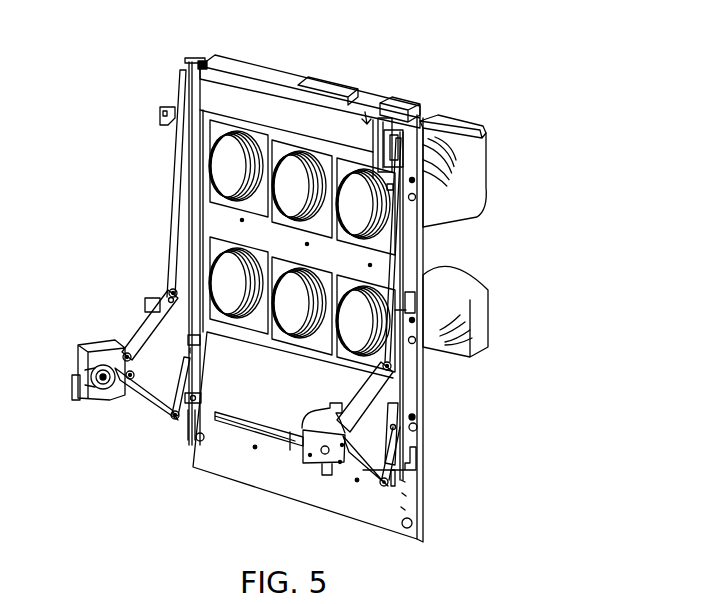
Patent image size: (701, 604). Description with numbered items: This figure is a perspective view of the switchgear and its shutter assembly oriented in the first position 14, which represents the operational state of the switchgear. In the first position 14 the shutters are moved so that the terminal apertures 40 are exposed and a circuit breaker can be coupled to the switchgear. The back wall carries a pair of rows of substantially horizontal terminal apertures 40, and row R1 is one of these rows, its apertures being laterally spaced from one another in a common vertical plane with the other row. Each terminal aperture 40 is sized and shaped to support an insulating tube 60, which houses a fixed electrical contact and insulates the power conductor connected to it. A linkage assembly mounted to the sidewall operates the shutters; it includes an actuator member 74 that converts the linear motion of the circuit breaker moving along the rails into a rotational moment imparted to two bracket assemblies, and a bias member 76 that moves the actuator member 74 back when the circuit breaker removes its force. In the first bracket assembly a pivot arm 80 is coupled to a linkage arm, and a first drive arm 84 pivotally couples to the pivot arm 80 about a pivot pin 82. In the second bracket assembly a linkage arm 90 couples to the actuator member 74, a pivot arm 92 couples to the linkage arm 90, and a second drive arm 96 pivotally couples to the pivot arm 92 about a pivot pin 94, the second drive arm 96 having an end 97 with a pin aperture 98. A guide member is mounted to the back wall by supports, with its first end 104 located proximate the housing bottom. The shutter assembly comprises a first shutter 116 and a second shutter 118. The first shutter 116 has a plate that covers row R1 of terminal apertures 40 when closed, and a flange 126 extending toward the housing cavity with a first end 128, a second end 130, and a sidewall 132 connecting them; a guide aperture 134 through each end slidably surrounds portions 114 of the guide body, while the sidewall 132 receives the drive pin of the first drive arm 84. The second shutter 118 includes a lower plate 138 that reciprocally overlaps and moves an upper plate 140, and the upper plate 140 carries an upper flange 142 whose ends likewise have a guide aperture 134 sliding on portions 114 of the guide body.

The first position 14 is at (535, 321).
The terminal aperture 40 is at (212, 268).
The row R1 is at (217, 240).
The insulating tube 60 is at (463, 217).
The actuator member 74 is at (80, 365).
The bias member 76 is at (75, 397).
The pivot arm 80 is at (150, 392).
The pivot pin 82 is at (110, 353).
The first drive arm 84 is at (176, 383).
The linkage arm 90 is at (108, 340).
The pivot arm 92 is at (148, 300).
The pivot pin 94 is at (166, 293).
The second drive arm 96 is at (175, 163).
The end 97 is at (450, 142).
The pin aperture 98 is at (408, 138).
The first end 104 is at (392, 486).
The portions 114 is at (393, 372).
The first shutter 116 is at (247, 388).
The second shutter 118 is at (368, 122).
The flange 126 is at (197, 63).
The first end 128 is at (406, 472).
The second end 130 is at (396, 401).
The sidewall 132 is at (413, 428).
The guide aperture 134 is at (200, 338).
The lower plate 138 is at (332, 125).
The upper plate 140 is at (258, 72).
The upper flange 142 is at (183, 77).